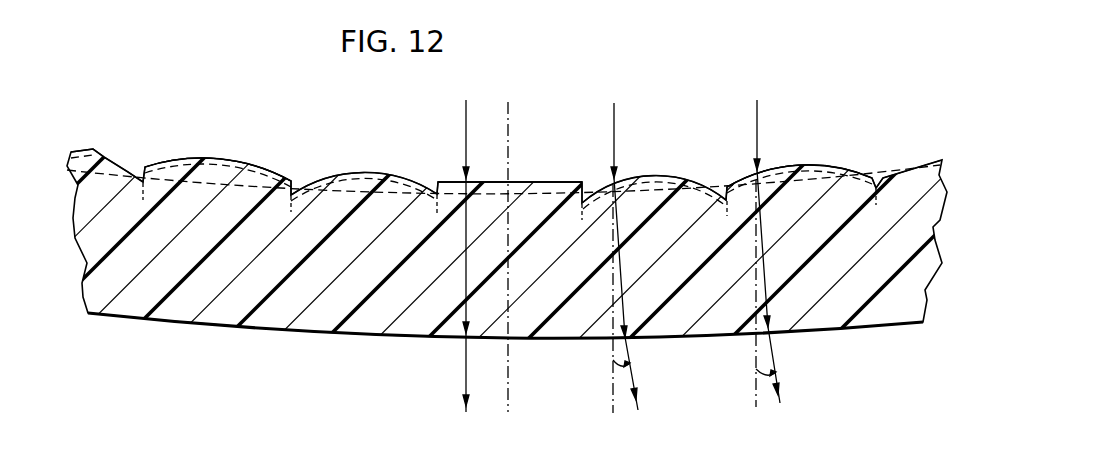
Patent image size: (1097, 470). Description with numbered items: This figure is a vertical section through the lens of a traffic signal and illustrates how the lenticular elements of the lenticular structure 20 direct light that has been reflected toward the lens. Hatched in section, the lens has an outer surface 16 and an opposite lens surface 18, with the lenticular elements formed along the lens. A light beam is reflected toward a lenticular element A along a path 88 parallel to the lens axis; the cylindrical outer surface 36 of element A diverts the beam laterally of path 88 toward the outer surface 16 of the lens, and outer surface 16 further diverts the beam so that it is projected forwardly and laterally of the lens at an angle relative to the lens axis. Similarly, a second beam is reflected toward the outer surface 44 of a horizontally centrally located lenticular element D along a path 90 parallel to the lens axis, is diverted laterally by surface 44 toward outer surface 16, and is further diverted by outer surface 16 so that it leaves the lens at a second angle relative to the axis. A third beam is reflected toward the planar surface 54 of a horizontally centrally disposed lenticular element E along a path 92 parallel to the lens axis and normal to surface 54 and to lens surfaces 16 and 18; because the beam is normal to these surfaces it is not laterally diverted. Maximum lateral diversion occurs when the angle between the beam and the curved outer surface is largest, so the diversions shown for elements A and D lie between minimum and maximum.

The outer surface of the lens 16 is at (880, 328).
The lens surface 18 is at (548, 192).
The lenticular structure 20 is at (784, 104).
The cylindrical outer surface 36 is at (204, 160).
The outer surface of lenticular element D 44 is at (90, 149).
The planar surface 54 is at (485, 181).
The path 88 is at (755, 390).
The path 90 is at (612, 395).
The path 92 is at (463, 386).